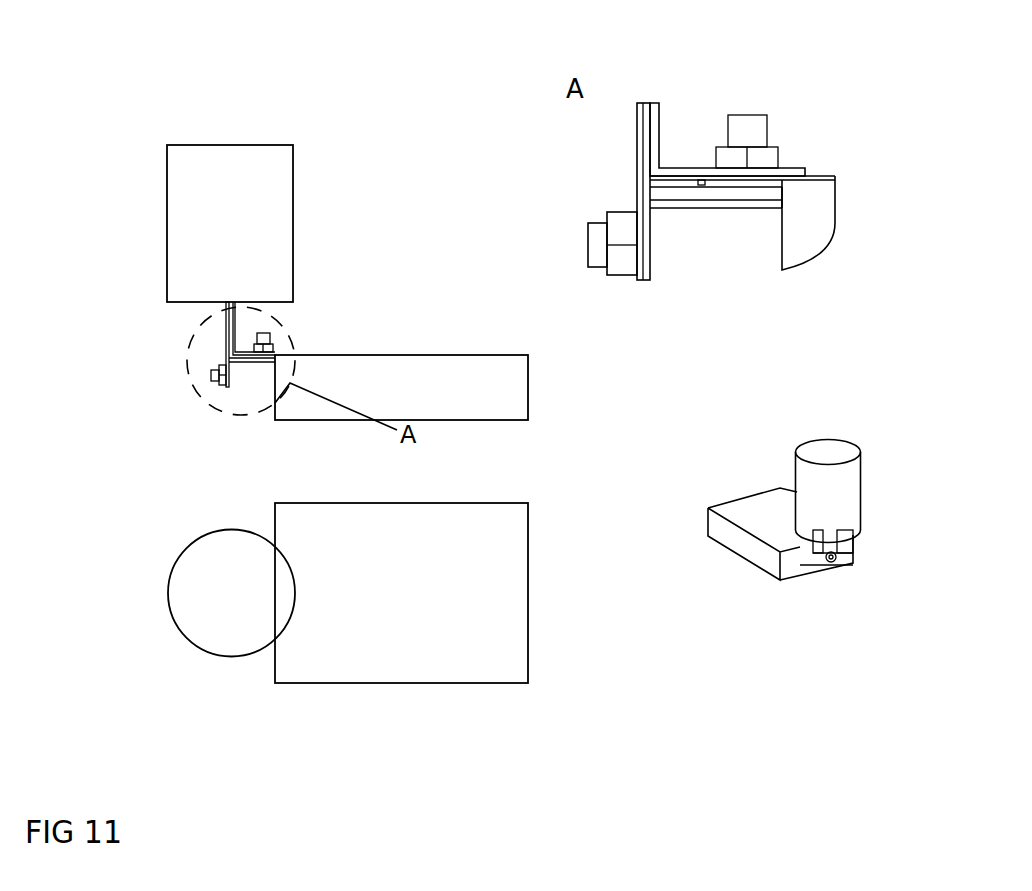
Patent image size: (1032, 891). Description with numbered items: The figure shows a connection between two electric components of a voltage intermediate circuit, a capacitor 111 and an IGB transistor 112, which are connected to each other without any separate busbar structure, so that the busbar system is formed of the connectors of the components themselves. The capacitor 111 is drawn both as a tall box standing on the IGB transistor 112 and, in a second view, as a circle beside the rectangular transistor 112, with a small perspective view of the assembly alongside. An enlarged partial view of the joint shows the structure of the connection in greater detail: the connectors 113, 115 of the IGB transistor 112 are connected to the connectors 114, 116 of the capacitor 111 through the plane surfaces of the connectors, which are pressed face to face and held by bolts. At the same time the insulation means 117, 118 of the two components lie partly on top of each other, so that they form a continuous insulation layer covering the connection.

The capacitor 111 is at (217, 178).
The IGB transistor 112 is at (511, 387).
The connector 113 is at (768, 182).
The connector 114 is at (660, 133).
The connector 115 is at (757, 205).
The connector 116 is at (636, 177).
The insulation means 117 is at (778, 193).
The insulation means 118 is at (648, 103).